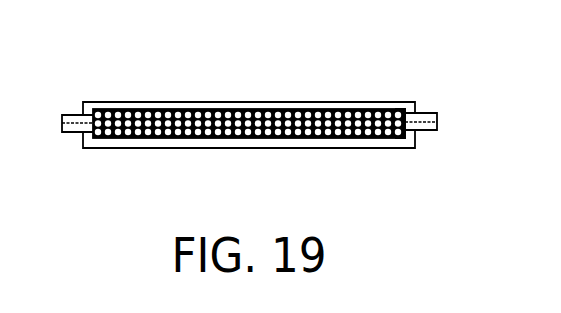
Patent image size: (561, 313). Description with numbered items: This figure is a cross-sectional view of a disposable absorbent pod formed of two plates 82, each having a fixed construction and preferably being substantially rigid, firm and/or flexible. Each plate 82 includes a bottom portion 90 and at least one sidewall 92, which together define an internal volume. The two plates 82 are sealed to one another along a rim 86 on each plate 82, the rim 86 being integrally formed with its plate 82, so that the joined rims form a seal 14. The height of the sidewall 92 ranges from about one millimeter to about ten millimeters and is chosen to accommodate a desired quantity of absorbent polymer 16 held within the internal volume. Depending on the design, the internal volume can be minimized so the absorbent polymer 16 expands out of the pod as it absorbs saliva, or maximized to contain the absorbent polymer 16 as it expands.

The seal 14 is at (430, 133).
The absorbent polymer 16 is at (126, 139).
The plate 82 is at (147, 105).
The rim 86 is at (75, 118).
The bottom portion 90 is at (247, 139).
The sidewall 92 is at (388, 108).